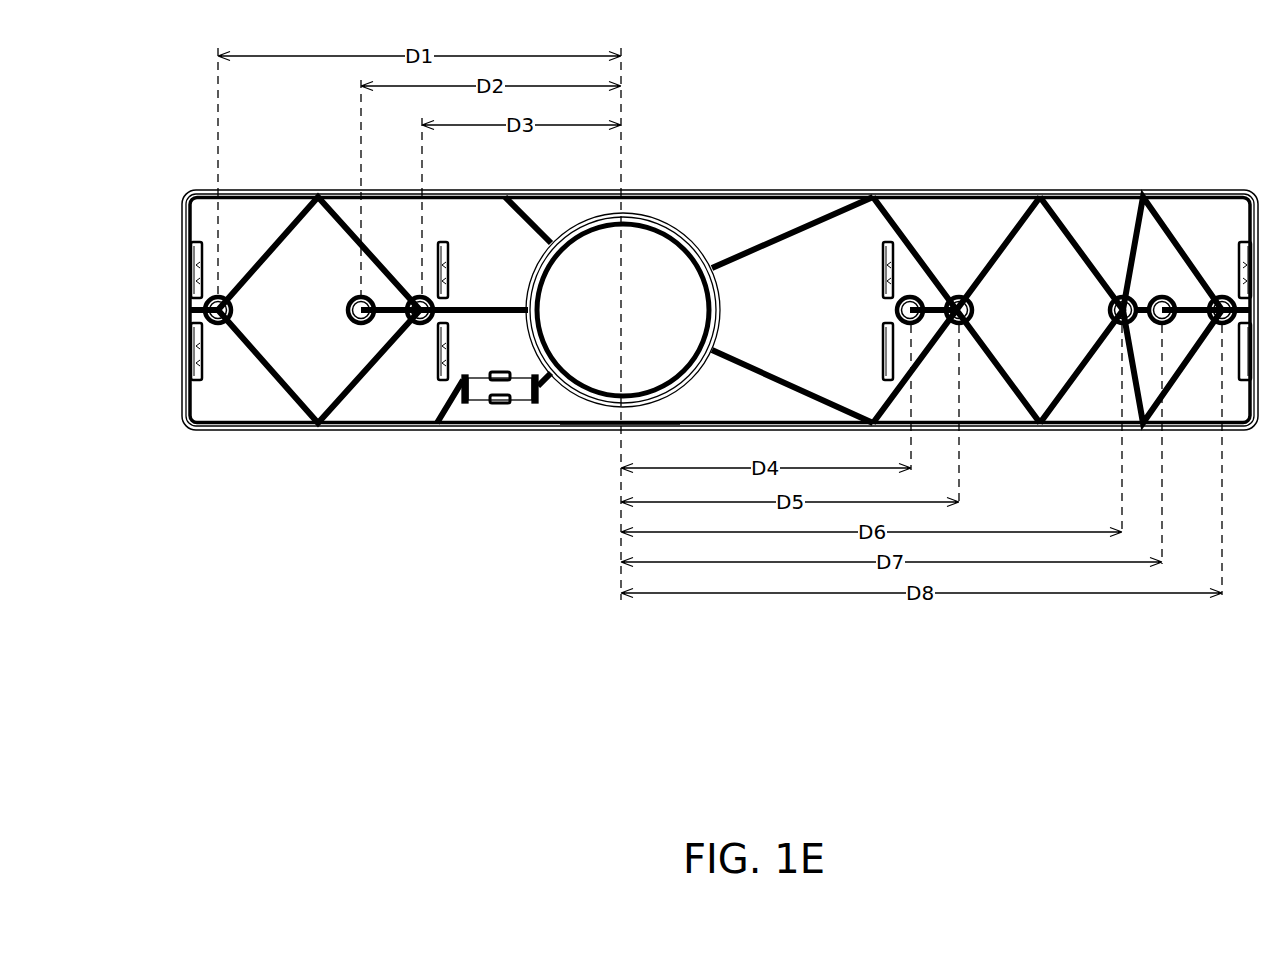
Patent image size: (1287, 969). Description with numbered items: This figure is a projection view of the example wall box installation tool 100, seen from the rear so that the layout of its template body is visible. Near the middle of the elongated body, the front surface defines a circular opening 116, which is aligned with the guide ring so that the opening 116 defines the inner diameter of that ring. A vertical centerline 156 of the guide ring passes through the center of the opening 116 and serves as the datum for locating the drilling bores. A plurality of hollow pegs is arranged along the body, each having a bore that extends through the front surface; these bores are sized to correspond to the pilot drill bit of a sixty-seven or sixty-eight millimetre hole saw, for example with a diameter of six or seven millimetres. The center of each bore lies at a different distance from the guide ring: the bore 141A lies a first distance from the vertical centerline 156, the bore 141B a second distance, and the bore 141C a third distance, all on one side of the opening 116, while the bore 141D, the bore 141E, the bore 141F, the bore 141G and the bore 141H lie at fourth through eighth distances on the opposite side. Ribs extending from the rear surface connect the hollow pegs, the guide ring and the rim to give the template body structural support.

The wall box installation tool 100 is at (119, 133).
The opening 116 is at (666, 222).
The bore 141A is at (220, 324).
The bore 141B is at (361, 324).
The bore 141C is at (420, 324).
The bore 141D is at (910, 296).
The bore 141E is at (959, 296).
The bore 141F is at (1122, 296).
The bore 141G is at (1162, 296).
The bore 141H is at (1222, 296).
The vertical centerline 156 is at (620, 443).